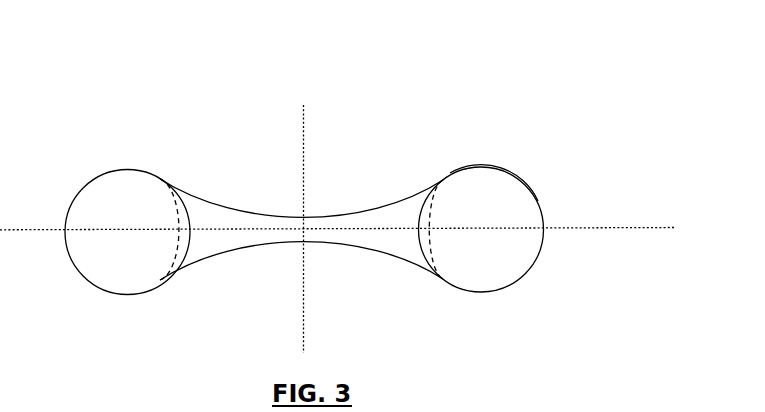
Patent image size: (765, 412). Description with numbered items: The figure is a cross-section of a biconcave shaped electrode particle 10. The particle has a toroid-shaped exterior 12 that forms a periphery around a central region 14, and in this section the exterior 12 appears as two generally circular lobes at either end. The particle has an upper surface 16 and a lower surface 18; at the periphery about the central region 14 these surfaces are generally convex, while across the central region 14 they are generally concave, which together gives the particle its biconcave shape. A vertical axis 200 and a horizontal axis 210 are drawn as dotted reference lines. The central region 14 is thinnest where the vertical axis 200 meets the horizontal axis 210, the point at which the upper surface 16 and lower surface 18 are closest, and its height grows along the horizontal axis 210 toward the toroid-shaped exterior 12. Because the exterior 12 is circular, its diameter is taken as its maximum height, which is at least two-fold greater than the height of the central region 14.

The biconcave shaped particle 10 is at (334, 221).
The toroid-shaped exterior 12 is at (540, 205).
The central region 14 is at (369, 207).
The upper surface 16 is at (513, 174).
The lower surface 18 is at (118, 295).
The vertical axis 200 is at (286, 229).
The horizontal axis 210 is at (337, 240).